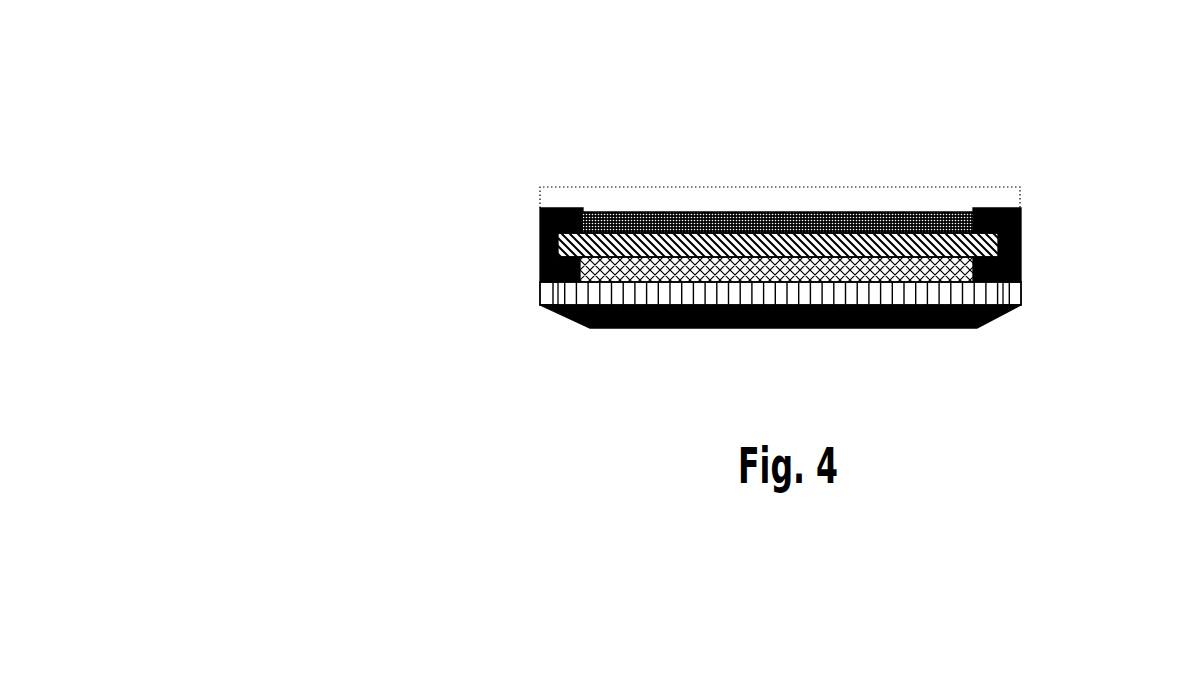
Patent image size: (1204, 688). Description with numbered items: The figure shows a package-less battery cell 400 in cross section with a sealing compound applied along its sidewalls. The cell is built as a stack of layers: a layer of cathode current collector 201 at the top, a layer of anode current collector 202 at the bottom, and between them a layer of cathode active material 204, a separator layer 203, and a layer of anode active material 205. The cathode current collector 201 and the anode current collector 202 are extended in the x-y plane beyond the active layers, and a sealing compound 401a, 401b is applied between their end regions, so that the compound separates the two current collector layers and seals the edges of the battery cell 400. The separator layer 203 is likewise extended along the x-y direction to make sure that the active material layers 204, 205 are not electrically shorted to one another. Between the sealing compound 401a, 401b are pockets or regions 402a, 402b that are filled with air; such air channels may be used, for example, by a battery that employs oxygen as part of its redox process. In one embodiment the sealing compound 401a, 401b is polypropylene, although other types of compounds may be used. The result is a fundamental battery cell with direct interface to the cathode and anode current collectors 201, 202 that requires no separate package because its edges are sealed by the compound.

The package-less battery cell 400 is at (283, 150).
The cathode current collector 201 is at (612, 211).
The anode current collector 202 is at (820, 290).
The separator layer 203 is at (693, 247).
The cathode active material 204 is at (650, 231).
The anode active material 205 is at (747, 270).
The sealing compound 401a is at (540, 222).
The sealing compound 401b is at (1020, 213).
The pocket or region 402a is at (540, 283).
The pocket or region 402b is at (1010, 285).